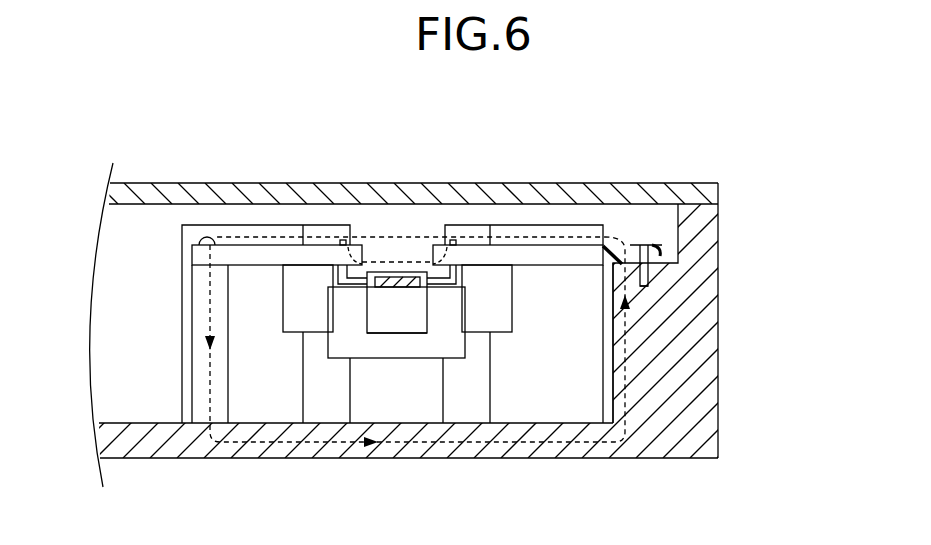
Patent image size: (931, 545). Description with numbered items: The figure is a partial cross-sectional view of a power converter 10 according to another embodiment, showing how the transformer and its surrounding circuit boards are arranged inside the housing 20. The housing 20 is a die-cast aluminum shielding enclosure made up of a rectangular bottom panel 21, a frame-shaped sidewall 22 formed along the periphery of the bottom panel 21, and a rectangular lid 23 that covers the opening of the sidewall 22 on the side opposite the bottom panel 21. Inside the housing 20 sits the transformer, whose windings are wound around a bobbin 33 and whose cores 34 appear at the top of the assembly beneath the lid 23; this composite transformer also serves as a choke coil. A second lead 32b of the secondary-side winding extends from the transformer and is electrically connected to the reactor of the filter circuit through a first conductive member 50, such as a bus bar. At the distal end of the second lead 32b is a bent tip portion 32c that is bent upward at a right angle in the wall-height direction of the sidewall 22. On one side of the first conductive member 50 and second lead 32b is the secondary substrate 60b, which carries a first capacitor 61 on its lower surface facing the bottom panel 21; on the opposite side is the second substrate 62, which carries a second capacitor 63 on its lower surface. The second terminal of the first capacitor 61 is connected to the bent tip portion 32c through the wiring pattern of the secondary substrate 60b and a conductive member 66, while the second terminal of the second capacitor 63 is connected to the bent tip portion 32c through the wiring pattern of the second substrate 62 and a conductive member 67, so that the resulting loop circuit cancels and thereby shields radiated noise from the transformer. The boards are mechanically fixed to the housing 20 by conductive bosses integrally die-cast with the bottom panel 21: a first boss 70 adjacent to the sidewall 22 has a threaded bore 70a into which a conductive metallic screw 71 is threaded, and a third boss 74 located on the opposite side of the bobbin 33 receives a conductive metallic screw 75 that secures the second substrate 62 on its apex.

The power converter 10 is at (641, 144).
The housing 20 is at (790, 180).
The bottom panel 21 is at (697, 445).
The sidewall 22 is at (700, 288).
The lid 23 is at (703, 194).
The second lead 32b is at (402, 335).
The bent tip portion 32c is at (413, 300).
The bobbin 33 is at (390, 358).
The cores 34 is at (240, 225).
The first conductive member 50 is at (380, 302).
The secondary substrate 60b is at (535, 265).
The first capacitor 61 is at (503, 332).
The second substrate 62 is at (182, 262).
The second capacitor 63 is at (288, 332).
The conductive member 66 is at (418, 263).
The conductive member 67 is at (362, 273).
The first boss 70 is at (642, 363).
The threaded bore 70a is at (643, 287).
The screw 71 is at (636, 244).
The third boss 74 is at (192, 375).
The screw 75 is at (198, 240).